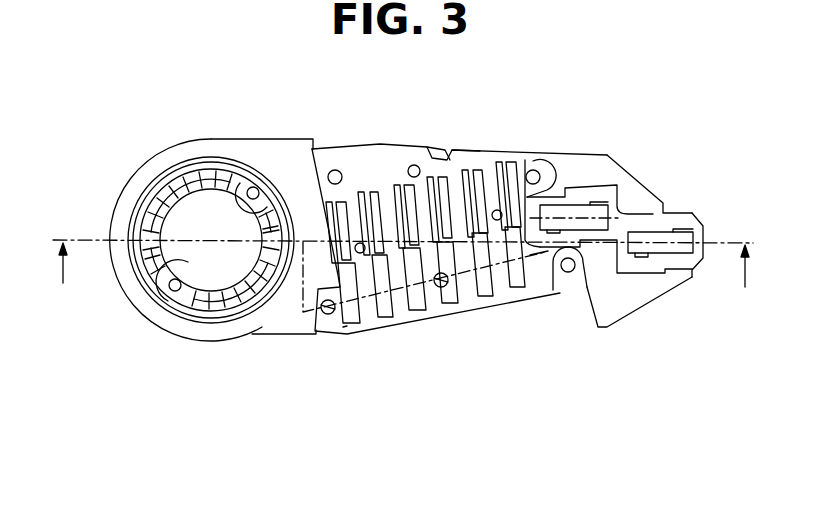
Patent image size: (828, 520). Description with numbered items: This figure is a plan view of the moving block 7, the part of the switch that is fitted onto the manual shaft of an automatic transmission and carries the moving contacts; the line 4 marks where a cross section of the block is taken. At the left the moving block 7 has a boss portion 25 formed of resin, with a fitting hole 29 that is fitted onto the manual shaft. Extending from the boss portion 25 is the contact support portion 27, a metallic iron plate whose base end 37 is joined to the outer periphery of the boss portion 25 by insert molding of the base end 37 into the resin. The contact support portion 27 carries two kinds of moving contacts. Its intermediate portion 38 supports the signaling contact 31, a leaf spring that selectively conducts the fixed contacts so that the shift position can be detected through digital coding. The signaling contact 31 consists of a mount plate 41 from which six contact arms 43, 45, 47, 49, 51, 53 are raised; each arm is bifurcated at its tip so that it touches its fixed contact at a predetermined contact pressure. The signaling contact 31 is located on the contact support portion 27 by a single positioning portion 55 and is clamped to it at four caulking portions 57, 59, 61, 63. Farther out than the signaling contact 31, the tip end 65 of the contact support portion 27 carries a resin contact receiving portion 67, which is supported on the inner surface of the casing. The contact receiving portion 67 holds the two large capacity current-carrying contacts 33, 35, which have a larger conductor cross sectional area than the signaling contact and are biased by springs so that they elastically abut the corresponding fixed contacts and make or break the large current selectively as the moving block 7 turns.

The moving block 7 is at (495, 76).
The boss portion 25 is at (237, 146).
The fitting hole 29 is at (162, 192).
The caulking portion 57 is at (333, 165).
The mount plate 41 is at (377, 173).
The contact support portion 27 is at (397, 146).
The intermediate portion 38 is at (422, 143).
The signaling contact 31 is at (461, 151).
The caulking portion 61 is at (534, 160).
The large capacity current-carrying contact 33 is at (590, 205).
The large capacity current-carrying contact 35 is at (672, 232).
The contact receiving portion 67 is at (700, 232).
The tip end 65 is at (647, 293).
The caulking portion 63 is at (578, 282).
The contact arm 53 is at (520, 255).
The contact arm 51 is at (500, 268).
The positioning portion 55 is at (458, 290).
The contact arm 49 is at (480, 270).
The contact arm 47 is at (436, 320).
The contact arm 45 is at (390, 285).
The contact arm 43 is at (357, 292).
The caulking portion 59 is at (323, 334).
The base end 37 is at (177, 340).
The section line 4- 4 is at (404, 280).